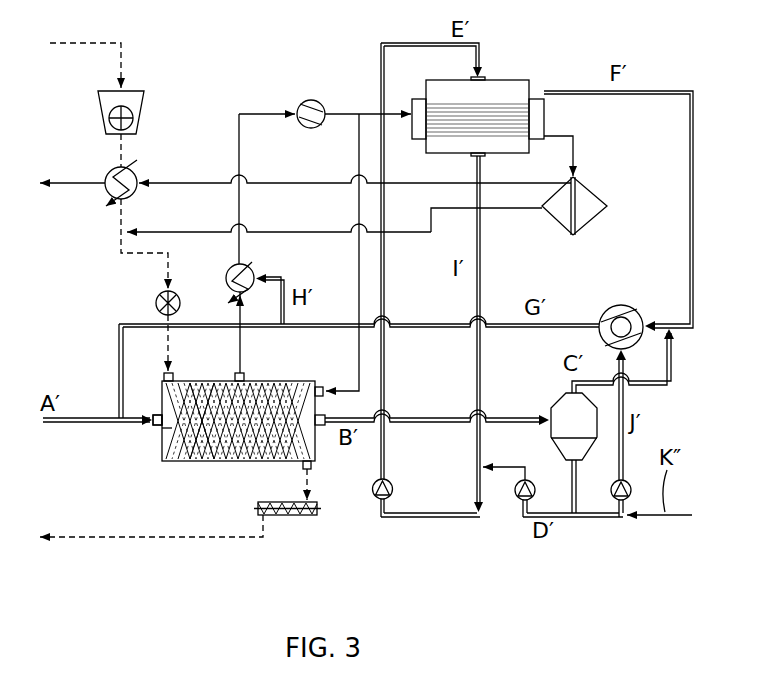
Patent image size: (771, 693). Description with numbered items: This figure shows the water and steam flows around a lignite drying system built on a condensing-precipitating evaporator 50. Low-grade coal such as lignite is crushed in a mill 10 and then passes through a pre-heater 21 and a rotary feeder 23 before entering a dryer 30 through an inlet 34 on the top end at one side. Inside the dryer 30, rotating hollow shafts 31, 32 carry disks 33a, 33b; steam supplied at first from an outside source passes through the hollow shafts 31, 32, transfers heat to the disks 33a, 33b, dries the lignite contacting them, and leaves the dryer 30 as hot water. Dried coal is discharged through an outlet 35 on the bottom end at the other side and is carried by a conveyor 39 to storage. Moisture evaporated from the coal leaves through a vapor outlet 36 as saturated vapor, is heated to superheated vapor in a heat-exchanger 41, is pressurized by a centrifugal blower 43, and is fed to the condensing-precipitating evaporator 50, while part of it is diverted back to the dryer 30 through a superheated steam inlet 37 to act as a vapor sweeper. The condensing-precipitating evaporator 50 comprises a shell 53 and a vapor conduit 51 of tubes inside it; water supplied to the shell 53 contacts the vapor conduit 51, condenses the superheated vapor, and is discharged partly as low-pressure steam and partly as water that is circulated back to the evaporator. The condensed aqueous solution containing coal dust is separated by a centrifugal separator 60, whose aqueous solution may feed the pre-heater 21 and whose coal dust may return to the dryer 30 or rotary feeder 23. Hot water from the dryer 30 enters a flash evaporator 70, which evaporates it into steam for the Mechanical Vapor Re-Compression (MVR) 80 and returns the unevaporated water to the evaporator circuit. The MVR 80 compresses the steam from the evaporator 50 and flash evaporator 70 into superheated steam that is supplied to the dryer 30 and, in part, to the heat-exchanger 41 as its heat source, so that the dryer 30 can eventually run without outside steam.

The mill 10 is at (131, 90).
The pre-heater 21 is at (110, 170).
The rotary feeder 23 is at (156, 302).
The dryer 30 is at (285, 381).
The hollow shaft 31 is at (152, 416).
The hollow shaft 32 is at (110, 397).
The disk 33a is at (160, 428).
The disk 33b is at (197, 442).
The inlet 34 is at (175, 374).
The outlet 35 is at (312, 468).
The vapor outlet 36 is at (245, 374).
The superheated steam inlet 37 is at (323, 386).
The conveyor 39 is at (278, 503).
The heat-exchanger 41 is at (228, 275).
The centrifugal blower 43 is at (303, 103).
The condensing-precipitating evaporator 50 is at (417, 77).
The vapor conduit 51 is at (461, 108).
The shell 53 is at (500, 88).
The centrifugal separator 60 is at (586, 198).
The flash evaporator 70 is at (564, 393).
The Mechanical Vapor Re-Compression (MVR) 80 is at (622, 305).